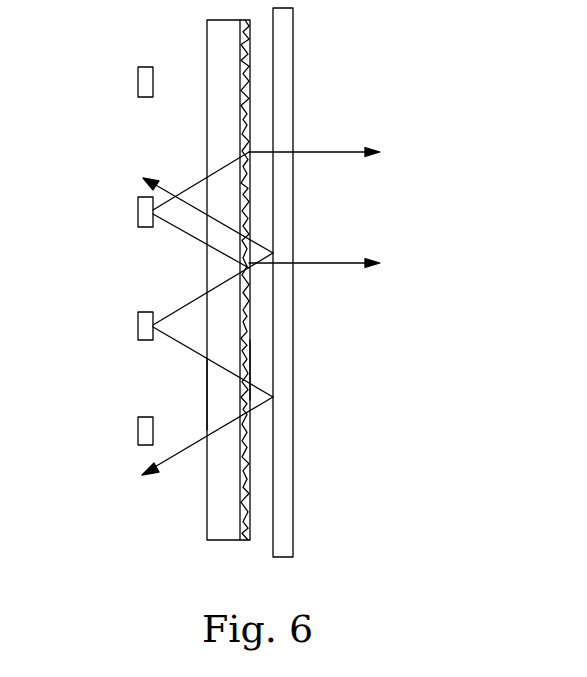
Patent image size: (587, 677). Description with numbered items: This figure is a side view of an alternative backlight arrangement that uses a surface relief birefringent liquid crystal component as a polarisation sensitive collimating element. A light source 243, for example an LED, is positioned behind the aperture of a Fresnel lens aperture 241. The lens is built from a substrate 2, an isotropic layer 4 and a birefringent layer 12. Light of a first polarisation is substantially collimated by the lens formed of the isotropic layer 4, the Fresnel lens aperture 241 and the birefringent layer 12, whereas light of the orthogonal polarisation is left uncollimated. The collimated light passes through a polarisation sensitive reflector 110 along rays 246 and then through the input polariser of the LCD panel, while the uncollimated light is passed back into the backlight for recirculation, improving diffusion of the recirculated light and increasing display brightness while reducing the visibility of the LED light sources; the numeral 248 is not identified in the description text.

The substrate 2 is at (208, 394).
The isotropic layer 4 is at (250, 370).
The birefringent layer 12 is at (240, 272).
The polarisation sensitive reflector 110 is at (287, 63).
The Fresnel lens aperture 241 is at (248, 122).
The light source 243 is at (137, 204).
The rays 246 is at (323, 152).
The reflected light 248 is at (250, 425).